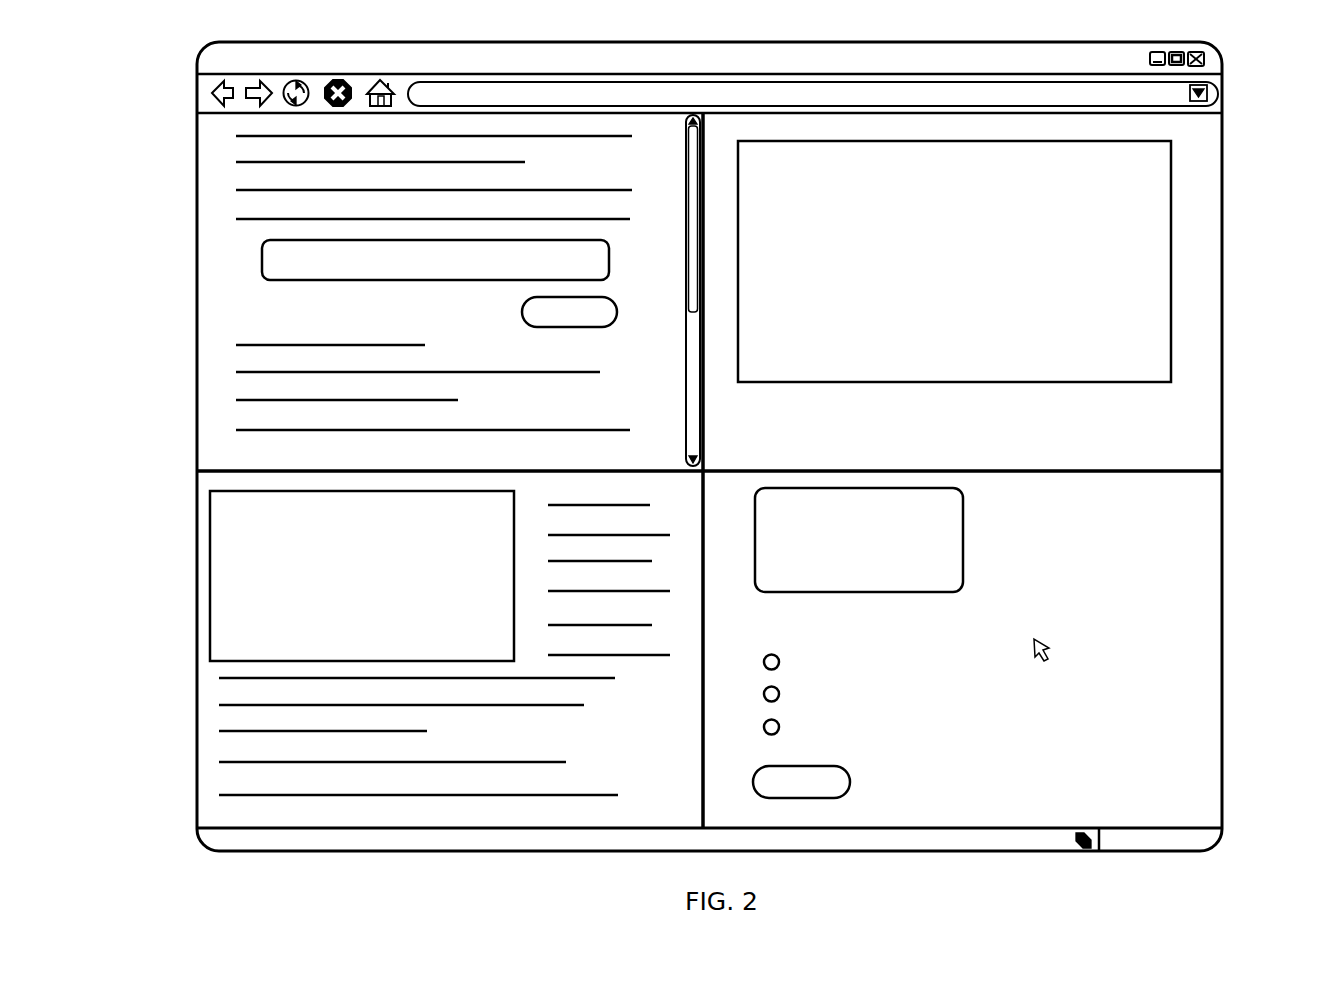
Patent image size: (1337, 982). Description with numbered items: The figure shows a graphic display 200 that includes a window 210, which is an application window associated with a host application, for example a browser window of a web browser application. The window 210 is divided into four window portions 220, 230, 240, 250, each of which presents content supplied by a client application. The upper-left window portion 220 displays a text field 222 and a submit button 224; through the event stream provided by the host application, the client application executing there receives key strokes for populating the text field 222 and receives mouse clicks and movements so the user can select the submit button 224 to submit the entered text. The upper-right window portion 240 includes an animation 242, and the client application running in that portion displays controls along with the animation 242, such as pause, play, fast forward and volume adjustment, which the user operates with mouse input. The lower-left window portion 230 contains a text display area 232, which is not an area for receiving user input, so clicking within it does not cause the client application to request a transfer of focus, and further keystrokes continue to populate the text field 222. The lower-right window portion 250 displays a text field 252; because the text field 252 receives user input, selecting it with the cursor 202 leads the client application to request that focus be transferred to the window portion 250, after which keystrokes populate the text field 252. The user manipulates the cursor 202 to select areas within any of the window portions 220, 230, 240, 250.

The graphic display 200 is at (108, 81).
The cursor 202 is at (1045, 663).
The window 210 is at (146, 207).
The window portion 220 is at (288, 315).
The text field 222 is at (262, 268).
The submit button 224 is at (612, 328).
The window portion 230 is at (288, 694).
The text display area 232 is at (305, 746).
The window portion 240 is at (1118, 418).
The animation 242 is at (1118, 245).
The window portion 250 is at (1135, 745).
The text field 252 is at (939, 522).